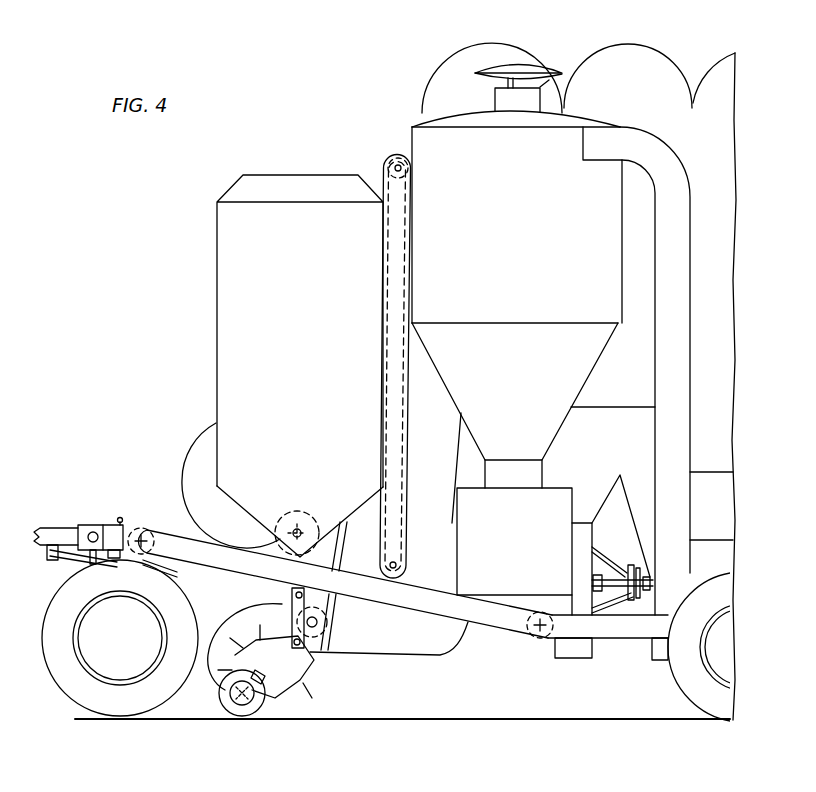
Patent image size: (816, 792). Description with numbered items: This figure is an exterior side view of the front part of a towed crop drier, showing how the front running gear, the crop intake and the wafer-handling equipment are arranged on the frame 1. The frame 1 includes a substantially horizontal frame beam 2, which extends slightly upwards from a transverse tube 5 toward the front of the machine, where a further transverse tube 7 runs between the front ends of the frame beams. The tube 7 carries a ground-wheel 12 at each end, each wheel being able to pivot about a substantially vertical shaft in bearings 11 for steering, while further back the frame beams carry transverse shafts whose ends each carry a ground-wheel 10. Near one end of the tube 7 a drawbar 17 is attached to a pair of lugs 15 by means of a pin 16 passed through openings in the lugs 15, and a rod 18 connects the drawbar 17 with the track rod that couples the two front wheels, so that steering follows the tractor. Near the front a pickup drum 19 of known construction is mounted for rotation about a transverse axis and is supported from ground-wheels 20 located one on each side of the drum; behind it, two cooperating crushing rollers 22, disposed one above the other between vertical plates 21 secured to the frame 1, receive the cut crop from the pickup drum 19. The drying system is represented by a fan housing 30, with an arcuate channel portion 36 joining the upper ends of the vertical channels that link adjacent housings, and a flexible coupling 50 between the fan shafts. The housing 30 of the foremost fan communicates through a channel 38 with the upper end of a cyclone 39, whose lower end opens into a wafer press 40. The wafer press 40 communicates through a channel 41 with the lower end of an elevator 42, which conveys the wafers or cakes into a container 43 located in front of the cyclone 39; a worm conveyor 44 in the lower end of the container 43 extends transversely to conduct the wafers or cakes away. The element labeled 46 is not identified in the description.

The frame 1 is at (246, 582).
The frame beam 2 is at (602, 636).
The tube 5 is at (530, 640).
The tube 7 is at (152, 536).
The ground-wheel 10 is at (692, 698).
The bearing 11 is at (160, 567).
The ground-wheel 12 is at (150, 704).
The lugs 15 is at (100, 524).
The pin 16 is at (119, 517).
The drawbar 17 is at (62, 528).
The rod 18 is at (67, 562).
The pickup drum 19 is at (290, 680).
The ground-wheel 20 is at (240, 717).
The vertical plate 21 is at (412, 660).
The crushing roller 22 is at (329, 622).
The fan housing 30 is at (573, 659).
The channel portion 36 is at (714, 72).
The channel 38 is at (678, 174).
The cyclone 39 is at (412, 138).
The wafer press 40 is at (545, 497).
The channel 41 is at (410, 567).
The elevator 42 is at (404, 250).
The container 43 is at (217, 244).
The worm conveyor 44 is at (303, 517).
The blower housing 46 is at (183, 452).
The flexible coupling 50 is at (620, 612).